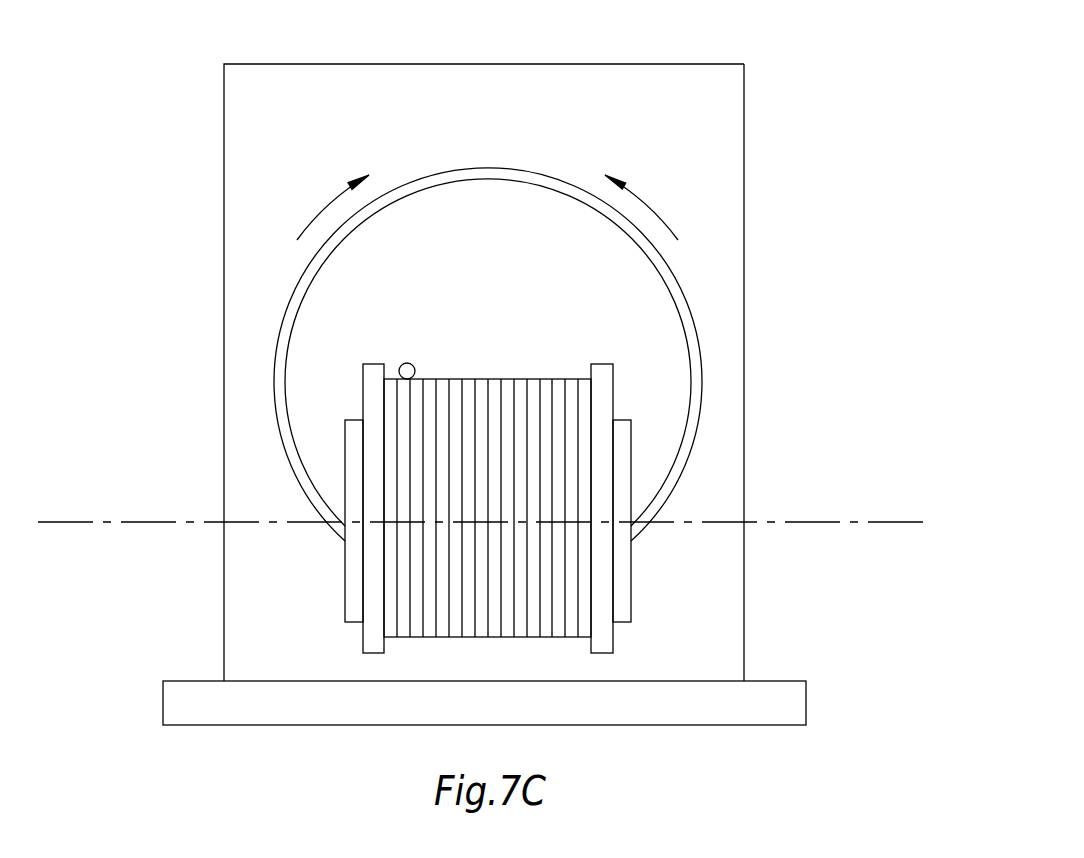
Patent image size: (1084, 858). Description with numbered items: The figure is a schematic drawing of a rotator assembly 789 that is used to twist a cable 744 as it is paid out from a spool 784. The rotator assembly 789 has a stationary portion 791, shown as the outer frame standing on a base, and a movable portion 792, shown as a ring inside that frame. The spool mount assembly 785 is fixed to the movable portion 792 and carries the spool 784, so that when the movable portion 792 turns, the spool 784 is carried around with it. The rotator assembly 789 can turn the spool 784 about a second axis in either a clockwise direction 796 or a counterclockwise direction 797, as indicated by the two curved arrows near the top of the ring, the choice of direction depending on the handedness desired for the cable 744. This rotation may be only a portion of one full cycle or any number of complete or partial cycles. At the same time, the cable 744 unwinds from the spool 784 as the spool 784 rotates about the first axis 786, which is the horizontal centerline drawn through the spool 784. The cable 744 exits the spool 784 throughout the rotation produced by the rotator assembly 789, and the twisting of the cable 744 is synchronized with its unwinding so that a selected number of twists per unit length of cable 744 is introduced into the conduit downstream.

The rotator assembly 789 is at (487, 64).
The stationary portion 791 is at (723, 112).
The movable portion 792 is at (503, 215).
The clockwise direction 796 is at (326, 205).
The counterclockwise direction 797 is at (650, 206).
The spool 784 is at (605, 400).
The spool mount assembly 785 is at (350, 447).
The cable 744 is at (407, 363).
The first axis 786 is at (67, 521).